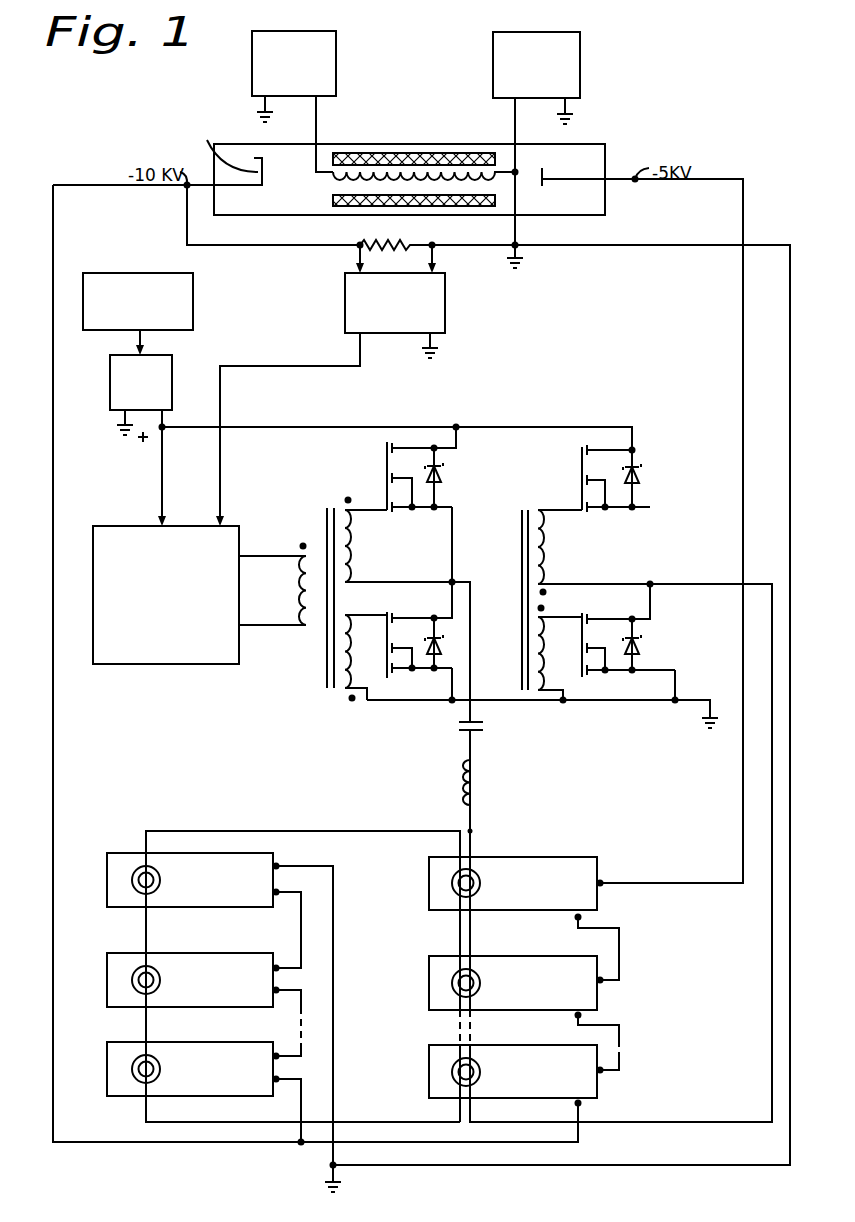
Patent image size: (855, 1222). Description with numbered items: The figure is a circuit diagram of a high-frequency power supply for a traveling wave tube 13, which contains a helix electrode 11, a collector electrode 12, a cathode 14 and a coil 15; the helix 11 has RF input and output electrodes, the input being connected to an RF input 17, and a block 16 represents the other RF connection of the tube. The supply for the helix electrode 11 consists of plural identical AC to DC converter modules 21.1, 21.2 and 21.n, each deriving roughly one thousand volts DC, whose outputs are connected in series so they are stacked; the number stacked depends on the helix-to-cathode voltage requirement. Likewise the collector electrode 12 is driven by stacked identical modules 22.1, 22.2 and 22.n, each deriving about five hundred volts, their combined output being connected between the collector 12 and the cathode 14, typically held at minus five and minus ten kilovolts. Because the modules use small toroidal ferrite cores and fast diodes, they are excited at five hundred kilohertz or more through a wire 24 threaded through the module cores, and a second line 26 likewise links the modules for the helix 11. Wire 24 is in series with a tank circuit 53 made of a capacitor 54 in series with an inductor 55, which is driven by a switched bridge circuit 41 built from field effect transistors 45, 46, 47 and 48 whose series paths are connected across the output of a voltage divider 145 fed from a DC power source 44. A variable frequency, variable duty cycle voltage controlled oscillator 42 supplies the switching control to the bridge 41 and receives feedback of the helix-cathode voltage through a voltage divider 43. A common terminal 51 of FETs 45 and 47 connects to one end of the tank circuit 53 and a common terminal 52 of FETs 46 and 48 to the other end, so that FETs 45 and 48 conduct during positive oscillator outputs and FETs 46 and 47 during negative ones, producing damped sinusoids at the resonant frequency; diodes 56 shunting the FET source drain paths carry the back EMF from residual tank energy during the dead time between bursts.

The helix electrode 11 is at (436, 170).
The collector electrode 12 is at (552, 171).
The traveling wave tube 13 is at (591, 208).
The cathode 14 is at (220, 147).
The coil 15 is at (376, 156).
The RF input 16 is at (311, 43).
The RF input 17 is at (556, 43).
The AC to DC converter module 21.1 is at (125, 862).
The AC to DC converter module 21.2 is at (117, 968).
The AC to DC converter module 21.n is at (120, 1058).
The AC to DC converter module 22.1 is at (574, 864).
The AC to DC converter module 22.2 is at (433, 968).
The AC to DC converter module 22.n is at (432, 1056).
The wire 24 is at (473, 830).
The line 26 is at (263, 834).
The switched bridge circuit 41 is at (536, 468).
The variable frequency, variable duty cycle voltage controlled oscillator 42 is at (132, 530).
The voltage divider 43 is at (437, 304).
The DC power source 44 is at (118, 274).
The voltage divider 145 is at (162, 378).
The field effect transistor 45 is at (384, 466).
The field effect transistor 46 is at (578, 470).
The field effect transistor 47 is at (390, 612).
The field effect transistor 48 is at (585, 614).
The common terminal 51 is at (449, 580).
The common terminal 52 is at (647, 582).
The tank circuit 53 is at (462, 774).
The capacitor 54 is at (484, 726).
The inductor 55 is at (476, 782).
The diodes 56 is at (441, 472).